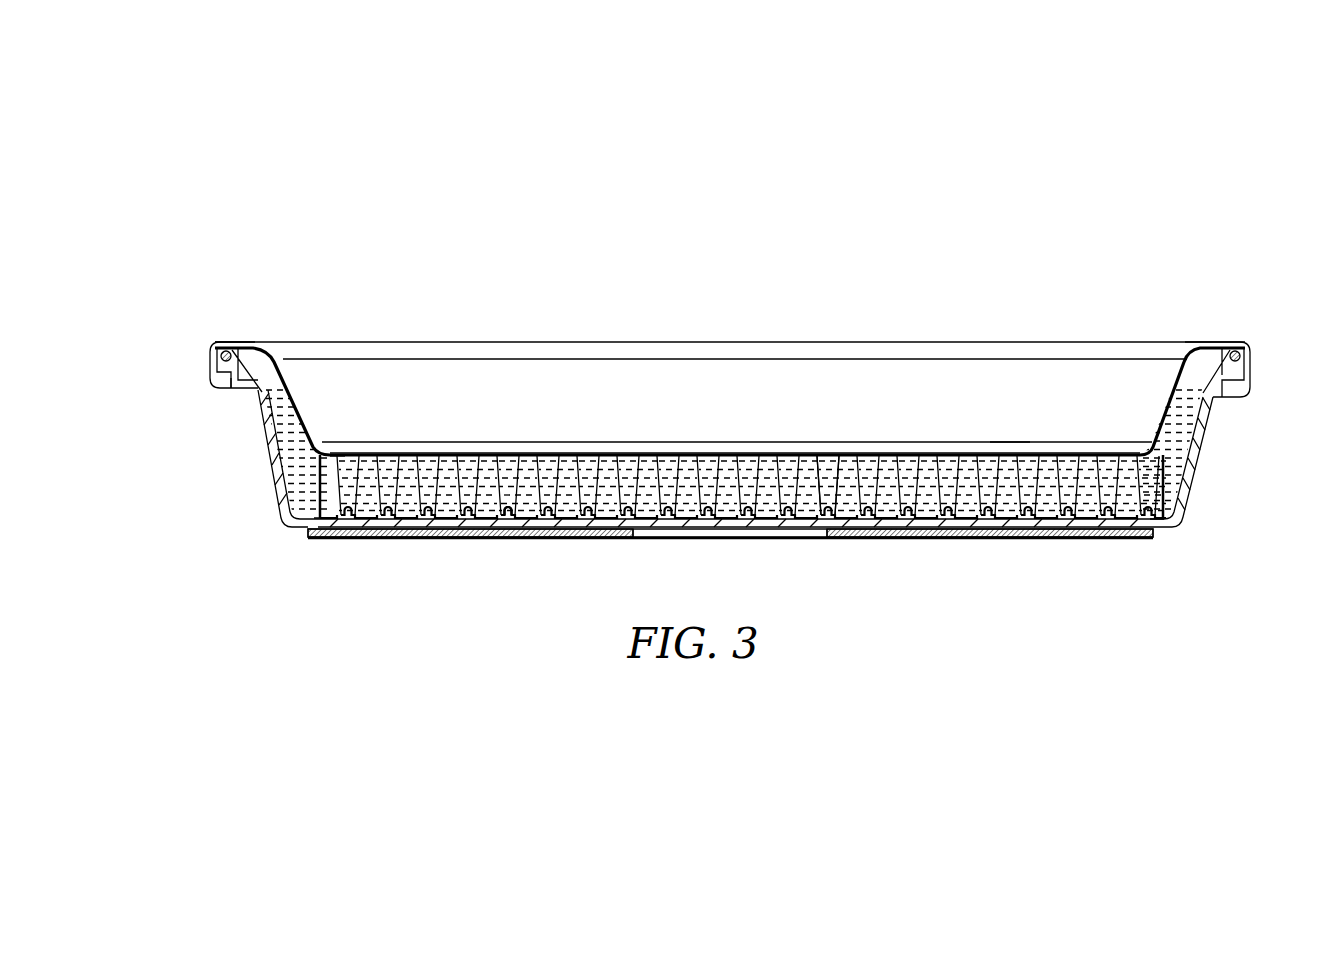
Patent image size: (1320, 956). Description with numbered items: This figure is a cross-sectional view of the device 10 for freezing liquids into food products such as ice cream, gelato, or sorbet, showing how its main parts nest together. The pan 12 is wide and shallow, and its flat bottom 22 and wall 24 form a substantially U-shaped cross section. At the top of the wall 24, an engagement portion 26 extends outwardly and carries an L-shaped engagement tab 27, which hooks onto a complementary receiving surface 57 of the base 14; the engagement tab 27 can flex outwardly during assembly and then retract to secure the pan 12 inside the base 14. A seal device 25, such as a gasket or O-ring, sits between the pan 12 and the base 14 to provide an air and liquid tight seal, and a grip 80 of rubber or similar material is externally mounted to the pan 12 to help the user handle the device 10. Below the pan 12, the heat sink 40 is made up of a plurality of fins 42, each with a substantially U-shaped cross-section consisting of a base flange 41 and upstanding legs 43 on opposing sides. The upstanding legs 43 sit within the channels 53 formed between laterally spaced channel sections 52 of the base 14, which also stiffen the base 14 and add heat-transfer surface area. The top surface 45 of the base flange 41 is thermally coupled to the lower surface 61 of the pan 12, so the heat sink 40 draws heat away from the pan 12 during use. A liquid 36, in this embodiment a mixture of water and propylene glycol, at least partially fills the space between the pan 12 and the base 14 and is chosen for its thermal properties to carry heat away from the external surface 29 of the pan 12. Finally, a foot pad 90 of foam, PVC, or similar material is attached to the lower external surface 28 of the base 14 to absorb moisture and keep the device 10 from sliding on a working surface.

The device 10 is at (199, 168).
The pan 12 is at (283, 360).
The base 14 is at (754, 433).
The flat bottom 22 is at (500, 453).
The wall 24 is at (978, 358).
The seal device 25 is at (217, 377).
The engagement portion 26 is at (240, 343).
The engagement tab 27 is at (221, 358).
The lower external surface 28 is at (1060, 544).
The external surface 29 is at (1010, 449).
The liquid 36 is at (1175, 442).
The heat sink 40 is at (1150, 490).
The base flange 41 is at (325, 456).
The fin 42 is at (306, 508).
The upstanding legs 43 is at (316, 486).
The top surface 45 is at (610, 449).
The channel sections 52 is at (506, 520).
The channel 53 is at (320, 528).
The receiving surface 57 is at (229, 388).
The lower surface 61 is at (829, 464).
The grip 80 is at (213, 346).
The foot pad 90 is at (1124, 542).